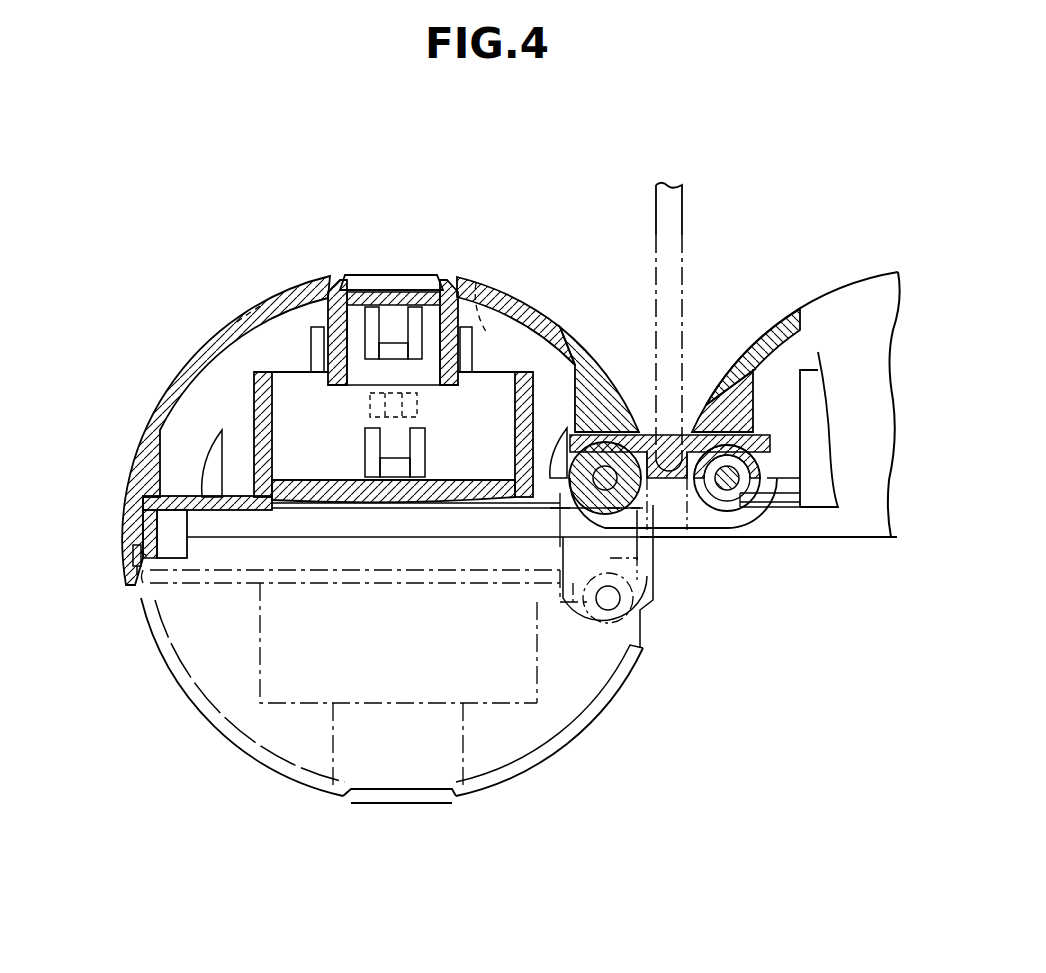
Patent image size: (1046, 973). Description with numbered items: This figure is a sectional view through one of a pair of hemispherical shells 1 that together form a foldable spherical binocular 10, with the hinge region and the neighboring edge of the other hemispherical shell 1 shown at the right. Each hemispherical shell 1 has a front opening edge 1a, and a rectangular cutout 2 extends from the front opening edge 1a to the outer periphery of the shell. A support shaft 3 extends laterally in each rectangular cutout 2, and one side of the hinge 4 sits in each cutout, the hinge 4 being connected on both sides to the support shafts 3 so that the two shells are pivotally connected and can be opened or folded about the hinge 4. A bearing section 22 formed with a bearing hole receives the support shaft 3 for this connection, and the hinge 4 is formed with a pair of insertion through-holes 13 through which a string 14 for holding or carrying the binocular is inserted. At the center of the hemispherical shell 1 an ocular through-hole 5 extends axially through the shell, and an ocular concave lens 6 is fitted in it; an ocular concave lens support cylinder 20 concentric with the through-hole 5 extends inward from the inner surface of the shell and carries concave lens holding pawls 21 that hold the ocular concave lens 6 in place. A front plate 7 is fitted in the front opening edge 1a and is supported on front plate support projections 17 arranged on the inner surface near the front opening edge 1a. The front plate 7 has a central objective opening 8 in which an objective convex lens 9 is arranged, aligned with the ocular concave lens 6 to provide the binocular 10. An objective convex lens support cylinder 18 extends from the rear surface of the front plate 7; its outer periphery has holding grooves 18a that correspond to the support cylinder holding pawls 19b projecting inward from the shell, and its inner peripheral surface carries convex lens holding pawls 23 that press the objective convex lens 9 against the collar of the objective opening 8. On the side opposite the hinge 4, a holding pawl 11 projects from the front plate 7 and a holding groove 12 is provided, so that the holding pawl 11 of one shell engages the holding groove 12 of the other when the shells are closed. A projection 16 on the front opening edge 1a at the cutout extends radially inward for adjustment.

The hemispherical shell 1 is at (512, 297).
The front opening edge 1a is at (222, 530).
The rectangular cutout 2 is at (622, 537).
The support shaft 3 is at (604, 425).
The hinge 4 is at (675, 518).
The ocular through-hole 5 is at (363, 281).
The ocular concave lens 6 is at (413, 300).
The front plate 7 is at (243, 510).
The objective opening 8 is at (297, 500).
The objective convex lens 9 is at (460, 482).
The binocular 10 is at (724, 596).
The holding pawl 11 is at (132, 547).
The holding groove 12 is at (138, 555).
The insertion through-hole 13 is at (655, 400).
The string 14 is at (682, 213).
The projection 16 is at (565, 365).
The front plate support projection 17 is at (213, 450).
The objective convex lens support cylinder 18 is at (260, 410).
The holding groove 18a is at (237, 322).
The support cylinder holding pawl 19b is at (476, 283).
The ocular concave lens support cylinder 20 is at (387, 320).
The concave lens holding pawl 21 is at (328, 300).
The bearing section 22 is at (747, 490).
The convex lens holding pawl 23 is at (395, 462).